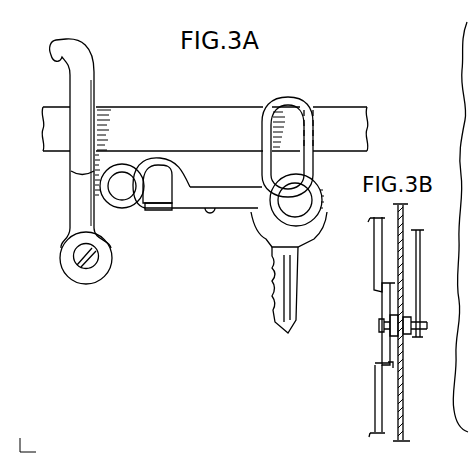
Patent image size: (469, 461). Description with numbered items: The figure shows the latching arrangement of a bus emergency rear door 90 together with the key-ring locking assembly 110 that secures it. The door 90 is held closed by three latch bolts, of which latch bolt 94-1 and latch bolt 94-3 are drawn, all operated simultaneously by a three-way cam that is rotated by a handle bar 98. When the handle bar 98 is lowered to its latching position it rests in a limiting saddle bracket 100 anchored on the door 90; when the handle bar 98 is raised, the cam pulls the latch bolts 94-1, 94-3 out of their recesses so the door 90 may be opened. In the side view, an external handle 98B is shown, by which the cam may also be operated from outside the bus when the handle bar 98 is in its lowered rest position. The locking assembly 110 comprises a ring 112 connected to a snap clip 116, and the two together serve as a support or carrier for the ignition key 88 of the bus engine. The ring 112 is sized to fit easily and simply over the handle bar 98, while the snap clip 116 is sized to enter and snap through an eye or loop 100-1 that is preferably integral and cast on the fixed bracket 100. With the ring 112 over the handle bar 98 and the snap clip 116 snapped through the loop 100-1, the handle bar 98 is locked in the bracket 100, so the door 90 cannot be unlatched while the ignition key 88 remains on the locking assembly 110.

In FIG. 3A, the ignition key 88 is at (280, 243).
In FIG. 3B, the rear door 90 is at (403, 390).
In FIG. 3B, the latch bolt 94-1 is at (374, 282).
In FIG. 3B, the latch bolt 94-3 is at (375, 378).
In FIG. 3A, the handle bar 98 is at (156, 116).
In FIG. 3B, the handle bar 98 is at (379, 332).
In FIG. 3B, the external handle 98B is at (422, 250).
In FIG. 3A, the saddle bracket 100 is at (85, 63).
In FIG. 3A, the eye or loop 100-1 is at (117, 208).
In FIG. 3A, the locking assembly 110 is at (274, 74).
In FIG. 3A, the ring 112 is at (292, 95).
In FIG. 3A, the snap clip 116 is at (247, 200).